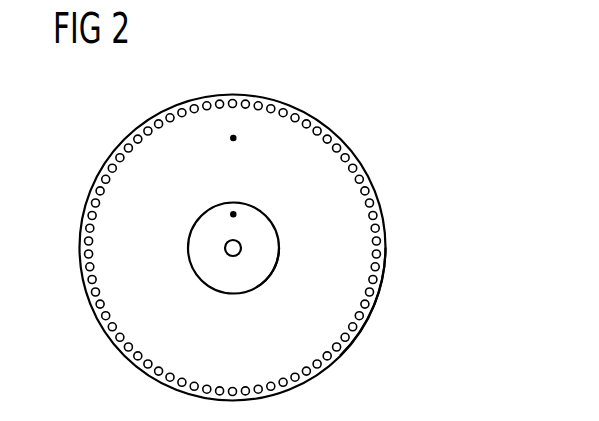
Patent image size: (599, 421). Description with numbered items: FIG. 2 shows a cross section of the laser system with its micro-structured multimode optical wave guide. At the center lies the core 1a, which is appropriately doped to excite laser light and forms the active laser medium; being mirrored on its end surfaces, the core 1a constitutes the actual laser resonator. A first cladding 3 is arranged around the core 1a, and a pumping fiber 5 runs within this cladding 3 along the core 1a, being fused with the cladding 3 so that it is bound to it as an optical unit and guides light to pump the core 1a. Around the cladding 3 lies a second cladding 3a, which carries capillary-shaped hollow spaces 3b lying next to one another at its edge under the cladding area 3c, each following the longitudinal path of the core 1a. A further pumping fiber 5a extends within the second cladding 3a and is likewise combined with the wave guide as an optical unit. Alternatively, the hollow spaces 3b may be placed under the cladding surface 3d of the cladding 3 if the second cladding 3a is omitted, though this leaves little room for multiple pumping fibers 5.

The core 1a is at (233, 252).
The cladding 3 is at (265, 237).
The second cladding 3a is at (355, 237).
The capillary-shaped hollow spaces 3b is at (357, 163).
The cladding area 3c is at (383, 285).
The cladding surface 3d is at (273, 268).
The pumping fiber 5 is at (232, 213).
The pumping fiber 5a is at (235, 139).